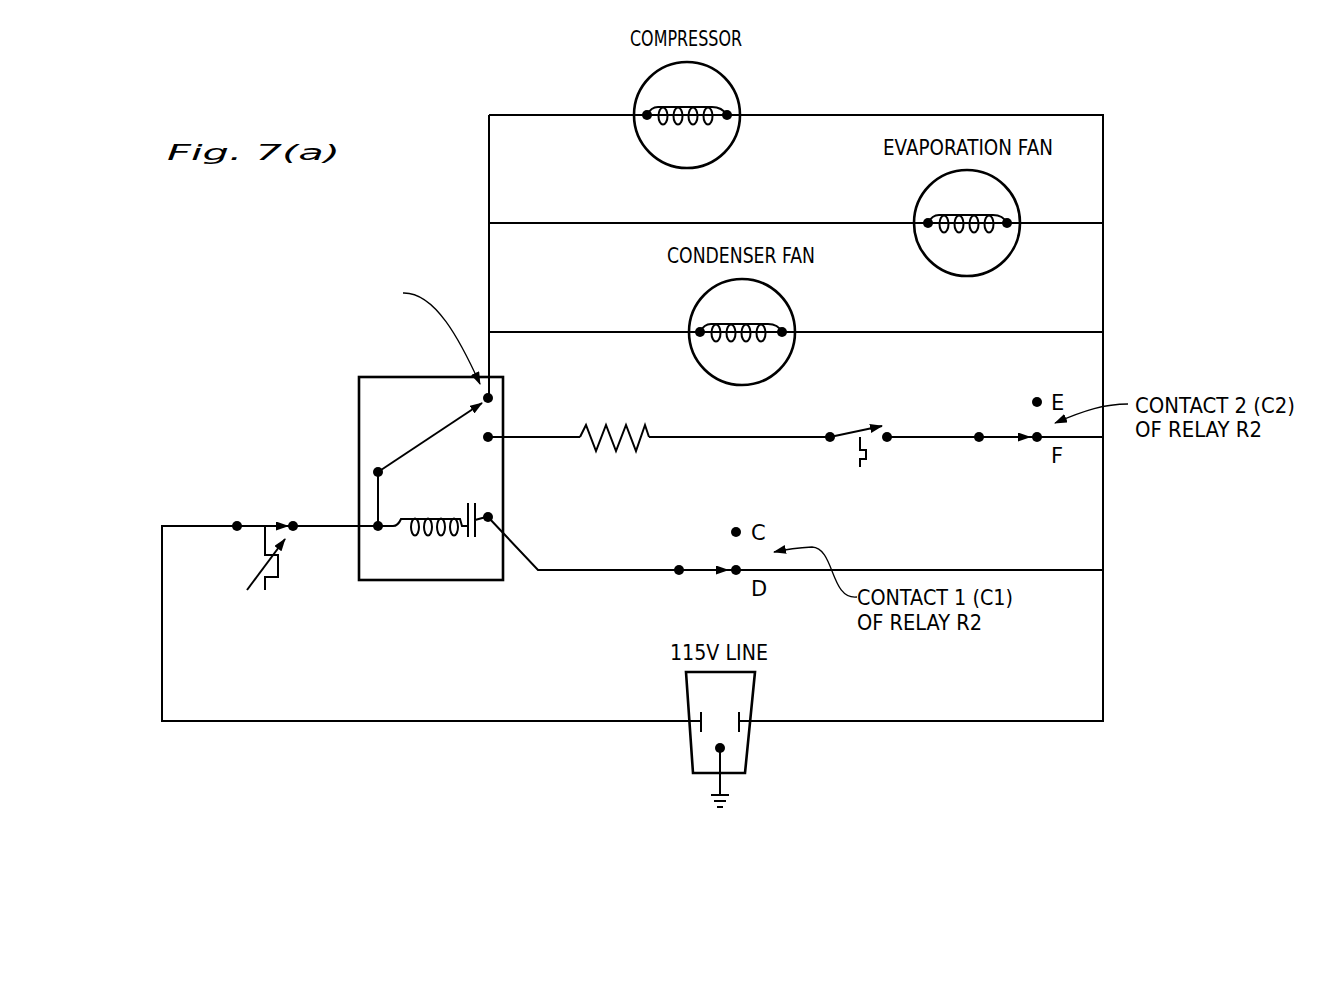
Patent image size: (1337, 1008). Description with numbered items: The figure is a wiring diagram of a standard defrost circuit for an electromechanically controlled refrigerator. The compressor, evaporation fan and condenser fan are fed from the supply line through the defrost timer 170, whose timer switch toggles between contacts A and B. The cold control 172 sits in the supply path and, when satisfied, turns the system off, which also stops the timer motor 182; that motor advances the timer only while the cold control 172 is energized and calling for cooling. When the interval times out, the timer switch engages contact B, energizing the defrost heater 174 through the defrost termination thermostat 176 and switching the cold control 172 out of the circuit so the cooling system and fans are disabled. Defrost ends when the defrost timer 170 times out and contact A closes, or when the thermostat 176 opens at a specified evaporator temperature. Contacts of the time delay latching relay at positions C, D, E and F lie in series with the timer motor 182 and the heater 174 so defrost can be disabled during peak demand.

The defrost timer 170 is at (357, 410).
The cold control 172 is at (278, 601).
The defrost heater 174 is at (626, 469).
The defrost termination thermostat 176 is at (889, 469).
The timer motor 182 is at (461, 549).